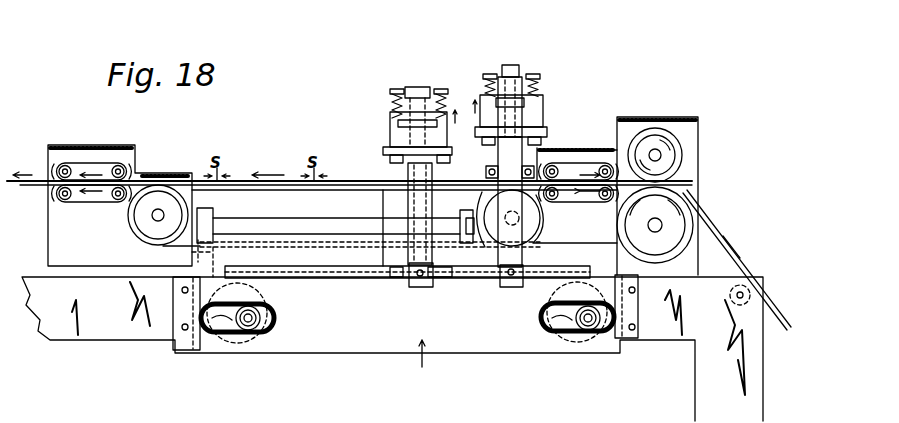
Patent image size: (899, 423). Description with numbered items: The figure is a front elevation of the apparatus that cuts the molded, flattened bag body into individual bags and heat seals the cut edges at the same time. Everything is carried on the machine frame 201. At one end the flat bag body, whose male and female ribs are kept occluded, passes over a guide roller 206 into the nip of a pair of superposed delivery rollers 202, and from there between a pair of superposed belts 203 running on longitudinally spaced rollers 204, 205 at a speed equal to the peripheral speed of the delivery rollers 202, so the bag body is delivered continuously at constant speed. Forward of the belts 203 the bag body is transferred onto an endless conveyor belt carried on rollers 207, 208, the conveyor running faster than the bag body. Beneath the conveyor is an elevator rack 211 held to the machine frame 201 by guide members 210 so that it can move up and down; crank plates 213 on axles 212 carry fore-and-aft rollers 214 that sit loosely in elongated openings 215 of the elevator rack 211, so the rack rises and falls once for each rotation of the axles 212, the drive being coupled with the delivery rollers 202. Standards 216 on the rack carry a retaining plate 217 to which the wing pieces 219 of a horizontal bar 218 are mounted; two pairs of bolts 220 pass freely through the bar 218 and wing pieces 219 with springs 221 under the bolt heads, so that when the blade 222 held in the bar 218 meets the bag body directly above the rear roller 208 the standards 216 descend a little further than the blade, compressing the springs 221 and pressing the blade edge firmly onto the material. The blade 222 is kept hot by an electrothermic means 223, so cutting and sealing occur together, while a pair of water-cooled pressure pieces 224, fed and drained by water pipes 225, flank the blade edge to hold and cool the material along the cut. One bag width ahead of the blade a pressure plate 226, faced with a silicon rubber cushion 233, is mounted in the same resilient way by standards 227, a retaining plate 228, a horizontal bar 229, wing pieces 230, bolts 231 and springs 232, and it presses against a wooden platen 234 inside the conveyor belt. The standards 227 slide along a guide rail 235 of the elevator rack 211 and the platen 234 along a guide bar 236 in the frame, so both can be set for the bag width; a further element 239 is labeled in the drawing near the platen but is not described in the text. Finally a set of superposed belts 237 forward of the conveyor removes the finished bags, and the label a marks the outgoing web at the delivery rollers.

The machine frame 201 is at (93, 332).
The delivery rollers 202 is at (673, 155).
The superposed belts 203 is at (580, 160).
The roller 204 is at (540, 214).
The roller 205 is at (638, 122).
The guide roller 206 is at (738, 305).
The roller 207 is at (143, 228).
The rear roller 208 is at (538, 228).
The guide members 210 is at (186, 316).
The elevator rack 211 is at (443, 342).
The axles 212 is at (218, 322).
The crank plates 213 is at (238, 328).
The fore-and-aft rollers 214 is at (263, 330).
The elongated openings 215 is at (230, 330).
The standards 216 is at (503, 252).
The post 217 is at (548, 128).
The horizontal bar 218 is at (515, 65).
The wing pieces 219 is at (543, 102).
The bolts 220 is at (489, 74).
The springs 221 is at (485, 85).
The blade 222 is at (488, 167).
The electrothermic means 223 is at (553, 143).
The pressure pieces 224 is at (486, 173).
The water pipes 225 is at (493, 265).
The pressure plate 226 is at (403, 158).
The standards 227 is at (408, 286).
The retaining plate 228 is at (390, 128).
The horizontal bar 229 is at (445, 80).
The wing pieces 230 is at (390, 110).
The bolts 231 is at (417, 87).
The springs 232 is at (398, 90).
The cushion 233 is at (405, 170).
The wooden platen 234 is at (385, 201).
The guide rail 235 is at (333, 279).
The guide bar 236 is at (240, 218).
The superposed belts 237 is at (90, 160).
The stylus mount 239 is at (316, 186).
The paper web a is at (781, 328).